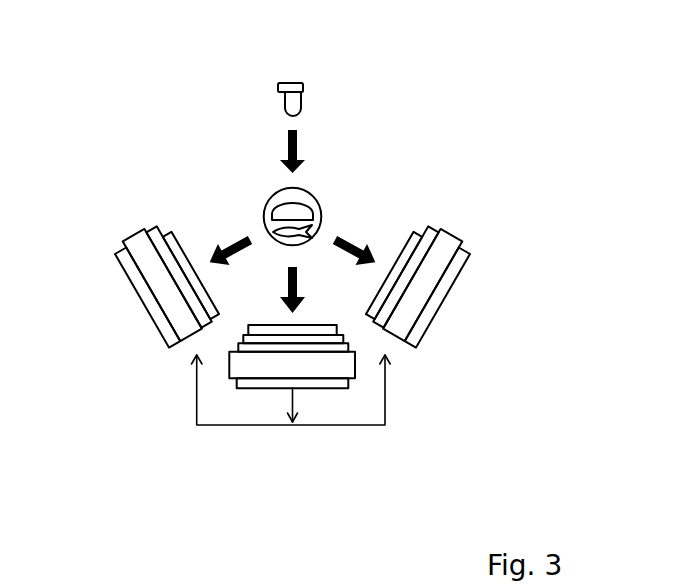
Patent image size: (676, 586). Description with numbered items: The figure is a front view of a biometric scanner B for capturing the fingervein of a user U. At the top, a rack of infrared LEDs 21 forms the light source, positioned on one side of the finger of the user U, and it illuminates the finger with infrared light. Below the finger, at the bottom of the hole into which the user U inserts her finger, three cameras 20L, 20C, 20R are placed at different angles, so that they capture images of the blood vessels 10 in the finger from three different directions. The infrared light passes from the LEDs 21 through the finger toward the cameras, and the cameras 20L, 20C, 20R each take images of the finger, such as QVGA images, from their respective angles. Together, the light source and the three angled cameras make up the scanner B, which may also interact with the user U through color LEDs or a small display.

The infrared LEDs 21 is at (305, 90).
The user U is at (312, 190).
The blood vessels 10 is at (318, 228).
The left camera 20L is at (145, 303).
The right camera 20R is at (440, 302).
The center camera 20C is at (323, 368).
The biometric scanner B is at (145, 407).